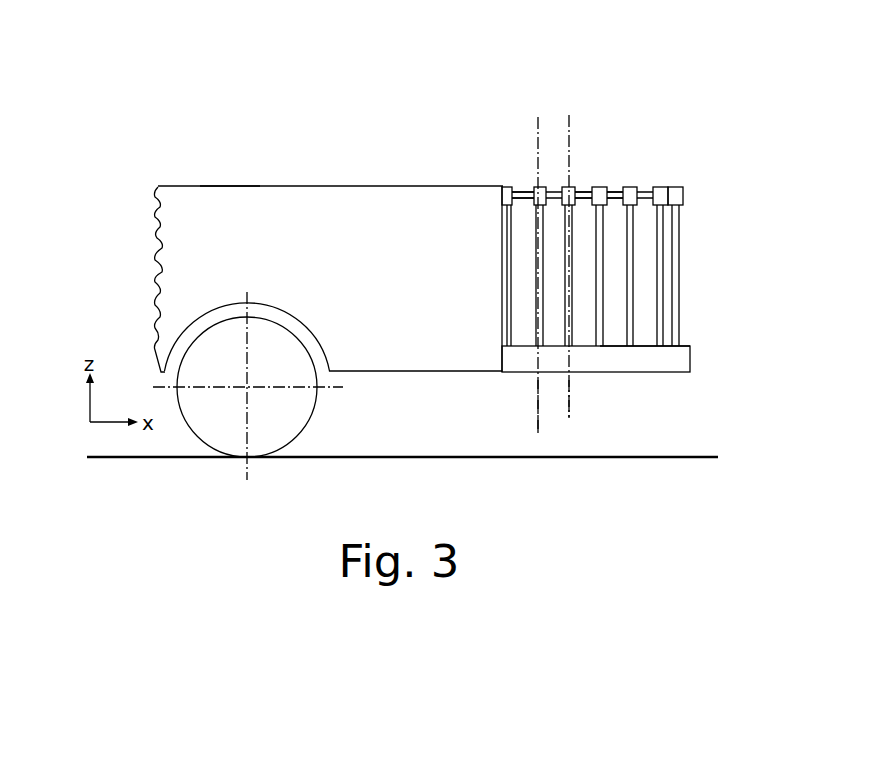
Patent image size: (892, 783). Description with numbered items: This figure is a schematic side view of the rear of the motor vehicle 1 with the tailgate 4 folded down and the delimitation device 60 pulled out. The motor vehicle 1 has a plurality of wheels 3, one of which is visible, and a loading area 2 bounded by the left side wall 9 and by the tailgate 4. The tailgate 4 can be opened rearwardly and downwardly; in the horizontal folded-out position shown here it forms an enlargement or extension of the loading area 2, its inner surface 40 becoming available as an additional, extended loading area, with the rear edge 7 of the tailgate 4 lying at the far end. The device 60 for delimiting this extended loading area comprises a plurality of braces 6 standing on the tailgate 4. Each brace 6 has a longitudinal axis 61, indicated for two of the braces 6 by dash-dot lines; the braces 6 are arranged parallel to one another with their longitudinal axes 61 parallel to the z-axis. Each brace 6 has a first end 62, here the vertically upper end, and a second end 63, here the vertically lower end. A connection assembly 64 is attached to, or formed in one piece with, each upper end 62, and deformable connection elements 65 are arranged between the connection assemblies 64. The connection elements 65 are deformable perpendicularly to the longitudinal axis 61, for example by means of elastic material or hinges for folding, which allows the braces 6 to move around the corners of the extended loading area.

The motor vehicle 1 is at (650, 92).
The loading area 2 is at (316, 175).
The wheel 3 is at (292, 407).
The tailgate 4 is at (638, 354).
The brace 6 is at (512, 186).
The rear edge 7 is at (690, 357).
The left side wall 9 is at (227, 198).
The inner surface 40 is at (641, 342).
The device 60 is at (690, 213).
The longitudinal axis 61 is at (540, 130).
The first end 62 is at (572, 186).
The second end 63 is at (567, 352).
The connection assembly 64 is at (606, 186).
The connection element 65 is at (583, 200).